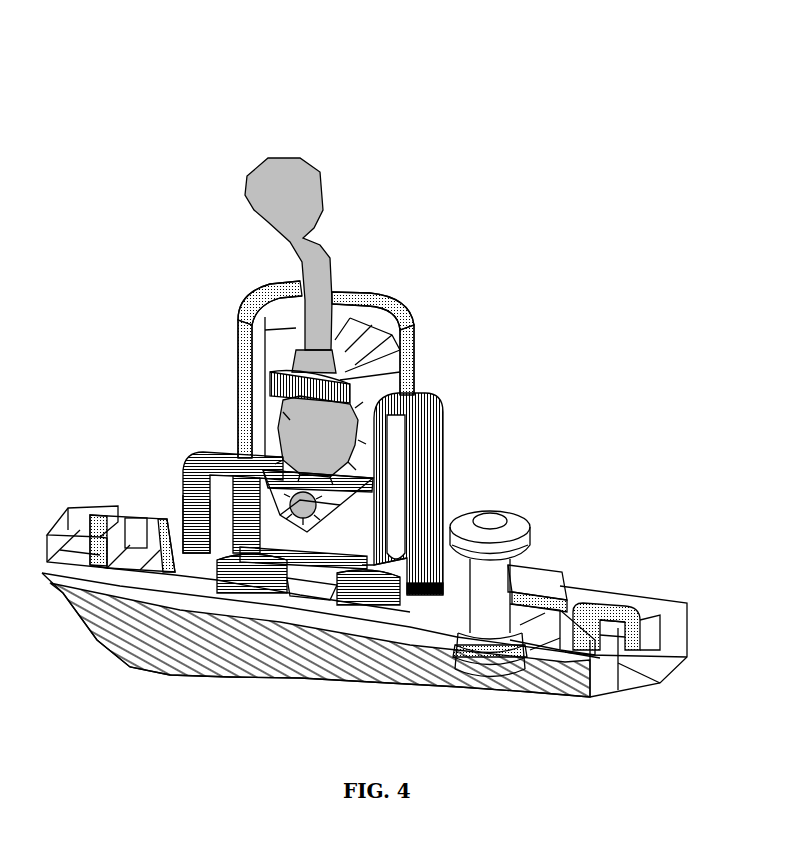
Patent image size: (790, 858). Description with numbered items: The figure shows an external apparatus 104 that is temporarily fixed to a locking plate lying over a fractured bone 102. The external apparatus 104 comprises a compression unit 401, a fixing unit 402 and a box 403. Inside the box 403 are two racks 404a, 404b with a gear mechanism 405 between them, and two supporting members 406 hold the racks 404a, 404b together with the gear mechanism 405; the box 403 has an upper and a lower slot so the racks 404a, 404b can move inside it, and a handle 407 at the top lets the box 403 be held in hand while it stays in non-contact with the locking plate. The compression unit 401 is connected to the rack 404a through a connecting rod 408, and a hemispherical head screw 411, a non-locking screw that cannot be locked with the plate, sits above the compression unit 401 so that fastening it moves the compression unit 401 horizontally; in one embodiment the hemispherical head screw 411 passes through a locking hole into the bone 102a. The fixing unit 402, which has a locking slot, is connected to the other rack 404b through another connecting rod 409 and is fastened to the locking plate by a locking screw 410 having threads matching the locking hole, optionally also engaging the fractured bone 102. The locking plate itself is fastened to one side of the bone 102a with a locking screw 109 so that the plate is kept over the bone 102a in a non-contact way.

The external apparatus 104 is at (127, 74).
The fractured bone 102 is at (668, 604).
The bone 102a is at (200, 660).
The locking screw 109 is at (630, 614).
The compression unit 401 is at (562, 572).
The fixing unit 402 is at (173, 538).
The box 403 is at (382, 302).
The rack 404a is at (364, 392).
The rack 404b is at (283, 477).
The gear mechanism 405 is at (328, 442).
The supporting members 406 is at (304, 502).
The handle 407 is at (289, 170).
The connecting rod 408 is at (427, 454).
The connecting rod 409 is at (193, 480).
The locking screw 410 is at (124, 515).
The hemispherical head screw 411 is at (488, 517).